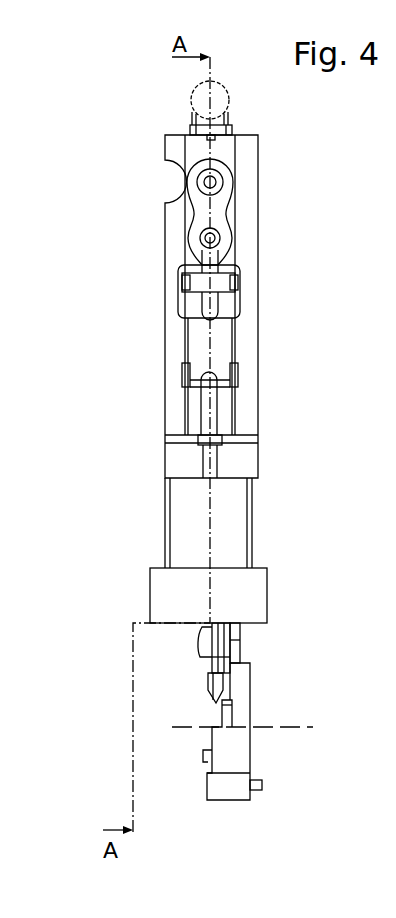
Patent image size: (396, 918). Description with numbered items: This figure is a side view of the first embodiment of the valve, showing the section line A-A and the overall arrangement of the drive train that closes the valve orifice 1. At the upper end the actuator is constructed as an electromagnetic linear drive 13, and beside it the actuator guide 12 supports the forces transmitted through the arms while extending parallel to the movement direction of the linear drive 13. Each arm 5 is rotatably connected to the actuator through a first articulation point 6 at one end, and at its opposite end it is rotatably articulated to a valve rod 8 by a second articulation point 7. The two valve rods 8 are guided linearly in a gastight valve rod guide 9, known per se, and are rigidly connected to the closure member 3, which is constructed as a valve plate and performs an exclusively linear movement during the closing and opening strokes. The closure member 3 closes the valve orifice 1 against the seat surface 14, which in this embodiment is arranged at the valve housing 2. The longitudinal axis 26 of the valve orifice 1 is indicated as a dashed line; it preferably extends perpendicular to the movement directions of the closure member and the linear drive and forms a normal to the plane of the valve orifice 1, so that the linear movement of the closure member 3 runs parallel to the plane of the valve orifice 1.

The valve orifice 1 is at (205, 734).
The valve housing 2 is at (242, 720).
The closure member 3 is at (220, 663).
The arm 5 is at (220, 333).
The first articulation point 6 is at (237, 275).
The second articulation point 7 is at (238, 375).
The valve rod 8 is at (213, 420).
The valve rod guide 9 is at (235, 513).
The actuator guide 12 is at (240, 237).
The electromagnetic linear drive 13 is at (233, 177).
The seat surface 14 is at (212, 727).
The longitudinal axis 26 is at (285, 727).